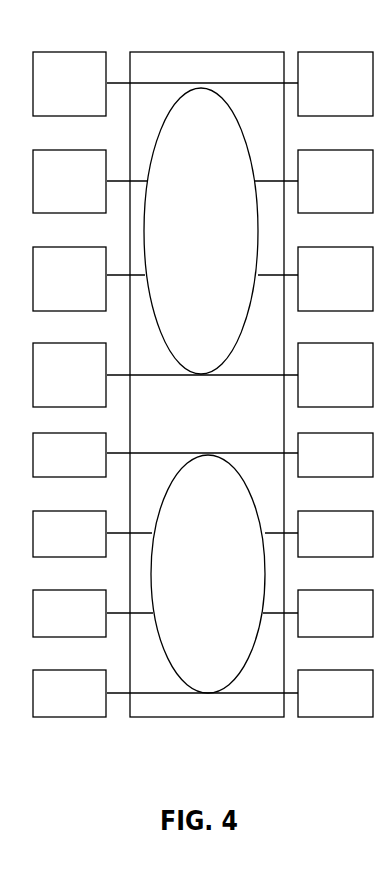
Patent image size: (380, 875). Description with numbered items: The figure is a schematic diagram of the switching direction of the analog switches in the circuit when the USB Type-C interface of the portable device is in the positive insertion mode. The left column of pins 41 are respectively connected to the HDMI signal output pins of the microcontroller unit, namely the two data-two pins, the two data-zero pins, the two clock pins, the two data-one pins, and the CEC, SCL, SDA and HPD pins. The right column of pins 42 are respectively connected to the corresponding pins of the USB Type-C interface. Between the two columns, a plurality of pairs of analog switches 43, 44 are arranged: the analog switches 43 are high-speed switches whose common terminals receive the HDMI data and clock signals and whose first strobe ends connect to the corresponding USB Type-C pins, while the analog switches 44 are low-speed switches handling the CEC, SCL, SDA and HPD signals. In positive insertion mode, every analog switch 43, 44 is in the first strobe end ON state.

The left column of pins 41 is at (72, 52).
The right column of pins 42 is at (360, 52).
The analog switches 43 is at (193, 100).
The analog switches 44 is at (220, 643).